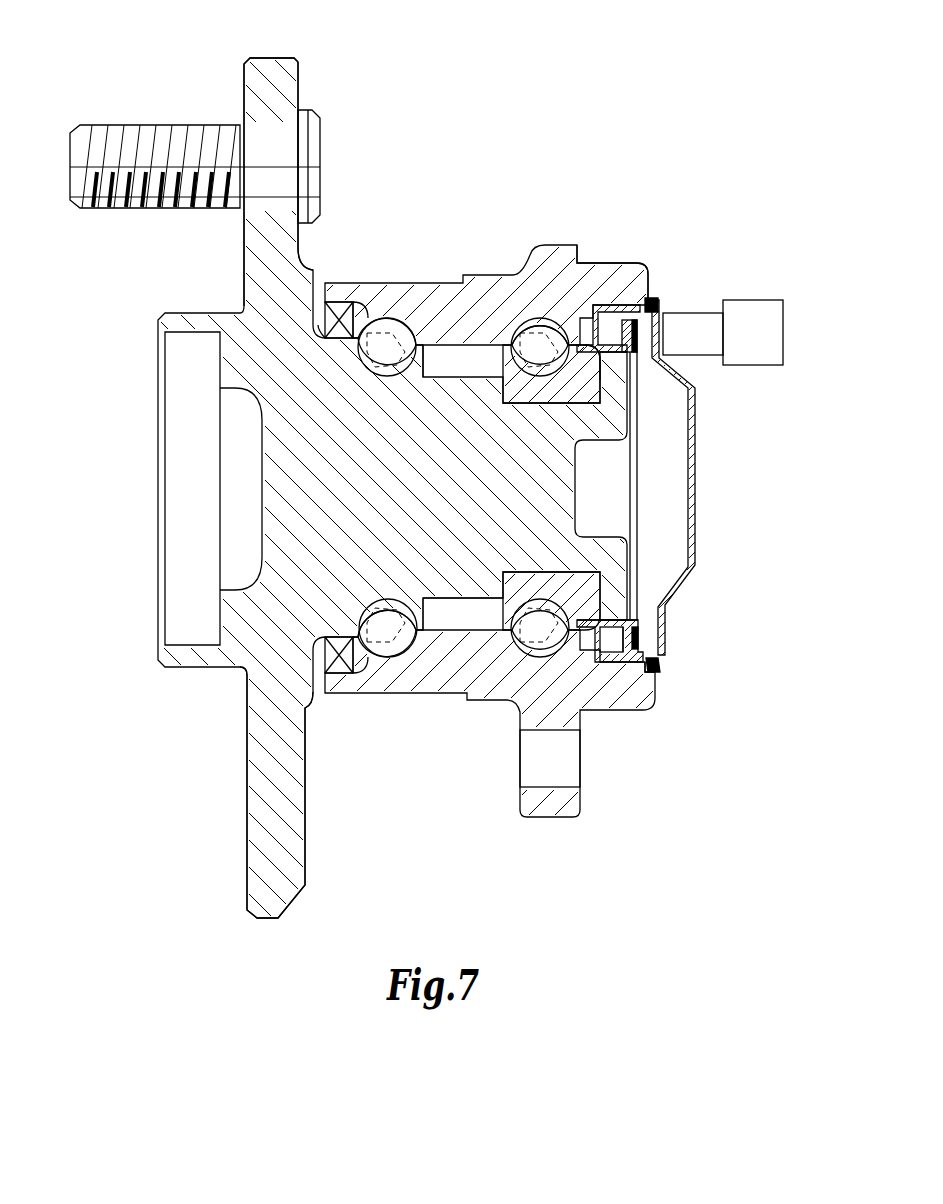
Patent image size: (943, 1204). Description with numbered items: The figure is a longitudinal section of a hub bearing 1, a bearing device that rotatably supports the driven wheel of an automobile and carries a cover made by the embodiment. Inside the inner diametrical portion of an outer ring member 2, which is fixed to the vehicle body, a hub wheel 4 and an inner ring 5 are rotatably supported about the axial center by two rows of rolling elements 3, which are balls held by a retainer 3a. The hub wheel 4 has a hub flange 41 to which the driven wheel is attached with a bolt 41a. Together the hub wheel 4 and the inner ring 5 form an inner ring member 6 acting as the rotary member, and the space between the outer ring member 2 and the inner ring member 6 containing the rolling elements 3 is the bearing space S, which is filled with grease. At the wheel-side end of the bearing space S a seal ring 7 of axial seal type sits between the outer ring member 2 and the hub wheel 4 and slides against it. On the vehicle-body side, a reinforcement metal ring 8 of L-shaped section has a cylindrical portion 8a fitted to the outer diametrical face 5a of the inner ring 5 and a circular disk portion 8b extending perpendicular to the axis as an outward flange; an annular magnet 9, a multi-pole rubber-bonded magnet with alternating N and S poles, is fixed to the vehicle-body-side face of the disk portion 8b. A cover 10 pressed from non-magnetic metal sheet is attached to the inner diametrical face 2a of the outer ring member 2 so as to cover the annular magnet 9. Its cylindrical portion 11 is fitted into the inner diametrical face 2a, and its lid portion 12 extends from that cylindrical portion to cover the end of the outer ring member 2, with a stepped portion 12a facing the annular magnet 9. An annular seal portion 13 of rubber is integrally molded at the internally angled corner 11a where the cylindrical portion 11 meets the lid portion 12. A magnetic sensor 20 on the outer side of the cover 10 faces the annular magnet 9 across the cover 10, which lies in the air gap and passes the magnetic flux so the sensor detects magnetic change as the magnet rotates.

The hub bearing 1 is at (463, 115).
The outer ring member 2 is at (492, 287).
The inner diametrical face 2a is at (647, 292).
The rolling elements 3 is at (539, 320).
The retainer 3a is at (506, 343).
The hub wheel 4 is at (453, 577).
The inner ring 5 is at (518, 583).
The outer diametrical face 5a is at (598, 330).
The inner ring member 6 is at (501, 762).
The seal ring 7 is at (340, 668).
The reinforcement metal ring 8 is at (612, 634).
The cylindrical portion 8a is at (592, 665).
The circular disk portion 8b is at (625, 655).
The annular magnet 9 is at (642, 633).
The cover 10 is at (711, 477).
The cylindrical portion 11 is at (652, 674).
The corner 11a is at (662, 670).
The lid portion 12 is at (695, 452).
The stepped portion 12a is at (657, 338).
The annular seal portion 13 is at (660, 298).
The magnetic sensor 20 is at (762, 310).
The hub flange 41 is at (253, 887).
The bolt 41a is at (122, 137).
The bearing space S is at (452, 357).